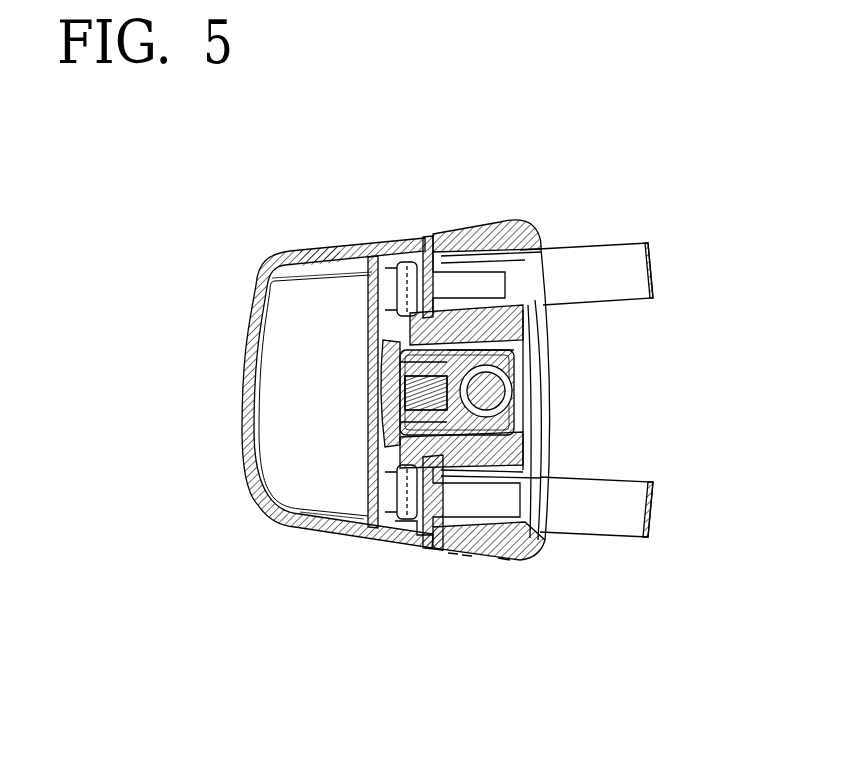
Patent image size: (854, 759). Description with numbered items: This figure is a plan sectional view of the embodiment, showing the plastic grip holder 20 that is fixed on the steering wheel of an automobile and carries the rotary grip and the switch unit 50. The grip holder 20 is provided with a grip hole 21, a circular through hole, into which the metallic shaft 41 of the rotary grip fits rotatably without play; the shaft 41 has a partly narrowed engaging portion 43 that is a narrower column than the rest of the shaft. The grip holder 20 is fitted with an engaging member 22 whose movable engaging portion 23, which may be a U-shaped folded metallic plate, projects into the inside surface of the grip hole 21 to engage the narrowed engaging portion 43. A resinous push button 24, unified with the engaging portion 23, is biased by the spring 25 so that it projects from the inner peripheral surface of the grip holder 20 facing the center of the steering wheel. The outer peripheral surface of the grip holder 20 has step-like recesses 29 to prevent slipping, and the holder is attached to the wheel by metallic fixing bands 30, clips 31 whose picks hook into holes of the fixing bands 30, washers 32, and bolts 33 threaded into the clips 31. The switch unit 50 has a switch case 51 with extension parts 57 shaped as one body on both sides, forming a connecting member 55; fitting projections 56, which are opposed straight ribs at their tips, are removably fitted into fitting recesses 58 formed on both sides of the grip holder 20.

The grip holder 20 is at (503, 389).
The grip hole 21 is at (500, 355).
The engaging member 22 is at (522, 412).
The engaging portion 23 is at (512, 364).
The push button 24 is at (392, 430).
The spring 25 is at (433, 543).
The step-like recesses 29 is at (533, 437).
The fixing bands 30 is at (652, 270).
The clips 31 is at (452, 240).
The washers 32 is at (376, 243).
The bolts 33 is at (340, 243).
The shaft 41 is at (478, 353).
The partly narrowed engaging portion 43 is at (512, 378).
The switch unit 50 is at (281, 393).
The switch case 51 is at (247, 448).
The connecting member 55 is at (452, 553).
The fitting projections 56 is at (467, 553).
The extension parts 57 is at (433, 550).
The fitting recesses 58 is at (503, 557).